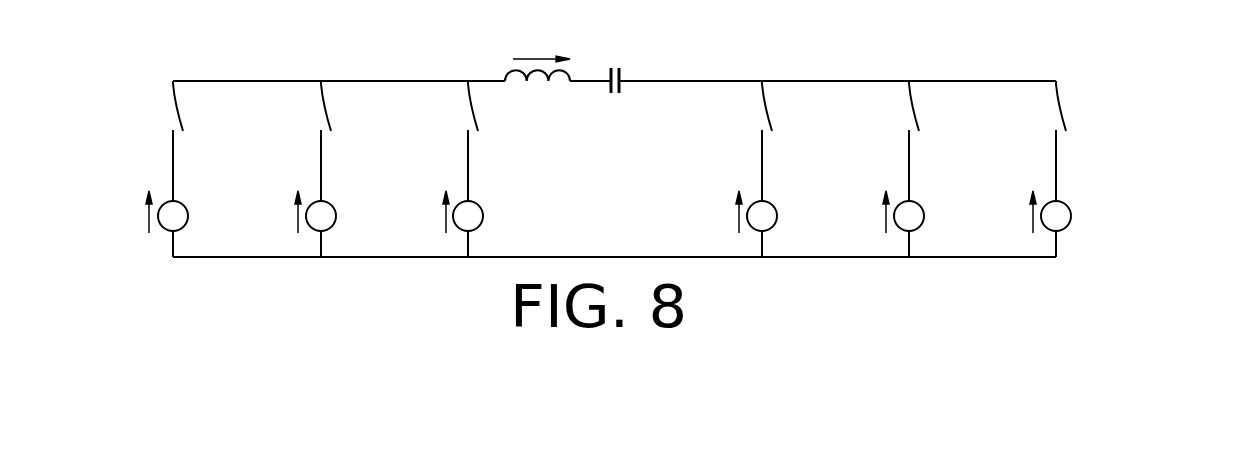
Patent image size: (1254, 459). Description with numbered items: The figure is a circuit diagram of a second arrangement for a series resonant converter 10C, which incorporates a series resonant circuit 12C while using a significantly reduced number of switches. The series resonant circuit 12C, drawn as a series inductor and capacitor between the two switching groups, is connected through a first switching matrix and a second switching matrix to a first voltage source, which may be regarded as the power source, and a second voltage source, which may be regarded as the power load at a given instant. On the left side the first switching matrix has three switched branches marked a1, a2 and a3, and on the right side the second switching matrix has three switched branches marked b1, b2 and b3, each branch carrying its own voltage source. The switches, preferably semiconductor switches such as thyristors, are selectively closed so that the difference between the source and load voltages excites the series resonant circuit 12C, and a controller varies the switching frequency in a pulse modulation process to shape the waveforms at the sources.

The series resonant converter 10C is at (653, 141).
The series resonant circuit 12C is at (557, 122).
The switch a1 of switching module SMa a1 is at (163, 169).
The switch a2 of switching module SMa a2 is at (311, 169).
The switch a3 of switching module SMa a3 is at (450, 169).
The switch b1 of switching module SMb b1 is at (753, 169).
The switch b2 of switching module SMb b2 is at (899, 169).
The switch b3 of switching module SMb b3 is at (1050, 169).